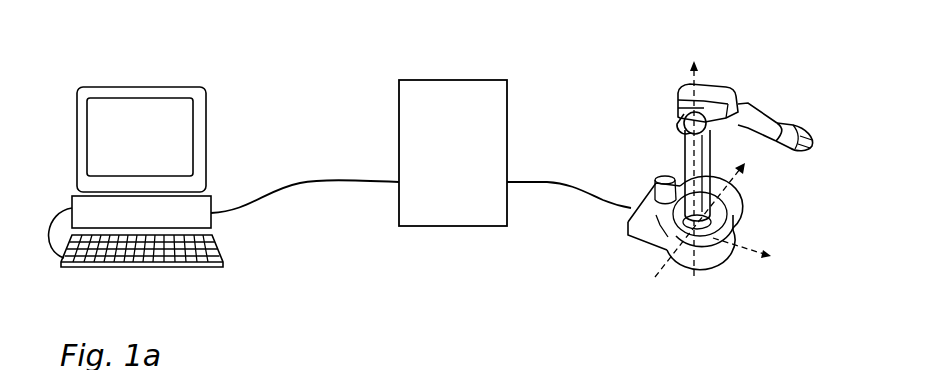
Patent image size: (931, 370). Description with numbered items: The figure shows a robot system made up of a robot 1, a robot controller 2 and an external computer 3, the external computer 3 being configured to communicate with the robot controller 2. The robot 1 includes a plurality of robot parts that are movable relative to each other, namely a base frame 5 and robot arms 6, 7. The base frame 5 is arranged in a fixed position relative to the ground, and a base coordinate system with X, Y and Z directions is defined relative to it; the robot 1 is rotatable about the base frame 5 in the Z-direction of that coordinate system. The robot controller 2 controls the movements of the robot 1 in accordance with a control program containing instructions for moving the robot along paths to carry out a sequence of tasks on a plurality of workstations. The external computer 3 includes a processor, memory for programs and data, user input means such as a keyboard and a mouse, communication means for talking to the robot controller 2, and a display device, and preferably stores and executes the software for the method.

The robot 1 is at (654, 81).
The robot controller 2 is at (437, 87).
The external computer 3 is at (77, 71).
The base frame 5 is at (648, 237).
The robot arm 6 is at (688, 158).
The robot arm 7 is at (758, 120).